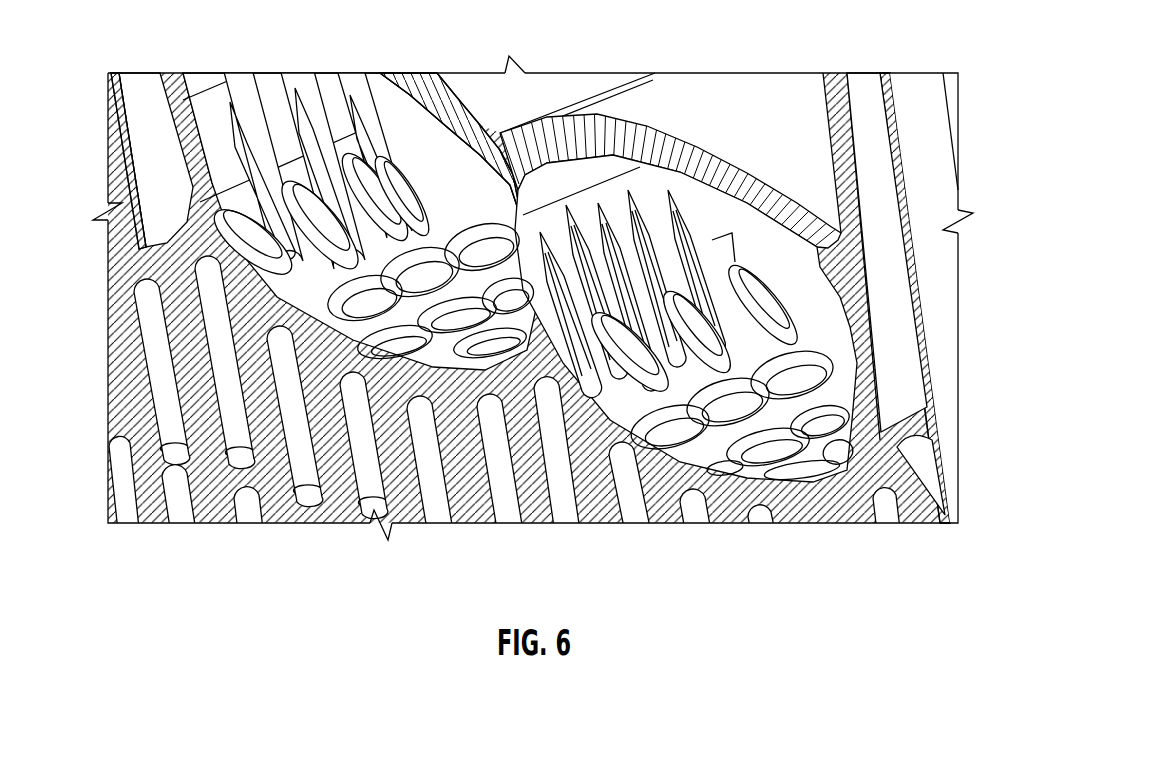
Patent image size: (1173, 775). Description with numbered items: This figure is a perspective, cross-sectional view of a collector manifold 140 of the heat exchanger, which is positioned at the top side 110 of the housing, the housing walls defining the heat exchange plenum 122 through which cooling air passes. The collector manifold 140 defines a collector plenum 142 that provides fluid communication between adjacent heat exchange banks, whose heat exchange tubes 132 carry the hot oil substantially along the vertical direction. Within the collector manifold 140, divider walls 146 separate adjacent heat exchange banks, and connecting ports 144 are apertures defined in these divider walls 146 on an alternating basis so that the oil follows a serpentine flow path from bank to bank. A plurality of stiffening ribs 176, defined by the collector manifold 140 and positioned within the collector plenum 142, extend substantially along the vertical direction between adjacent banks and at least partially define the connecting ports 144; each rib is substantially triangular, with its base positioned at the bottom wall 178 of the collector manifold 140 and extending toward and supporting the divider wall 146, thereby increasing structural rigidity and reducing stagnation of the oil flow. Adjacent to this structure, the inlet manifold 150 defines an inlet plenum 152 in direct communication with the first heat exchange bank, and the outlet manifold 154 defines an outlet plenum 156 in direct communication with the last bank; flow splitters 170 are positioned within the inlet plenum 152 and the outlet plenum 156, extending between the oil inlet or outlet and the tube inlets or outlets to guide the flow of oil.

The top side 110 is at (693, 107).
The heat exchange plenum 122 is at (307, 512).
The heat exchange tubes 132 is at (398, 521).
The collector manifold 140 is at (462, 108).
The collector plenum 142 is at (404, 150).
The connecting ports 144 is at (640, 228).
The divider walls 146 is at (523, 82).
The inlet manifold 150 is at (183, 123).
The inlet plenum 152 is at (140, 118).
The outlet manifold 154 is at (836, 90).
The outlet plenum 156 is at (904, 92).
The flow splitters 170 is at (125, 143).
The stiffening ribs 176 is at (262, 150).
The bottom wall 178 is at (345, 135).